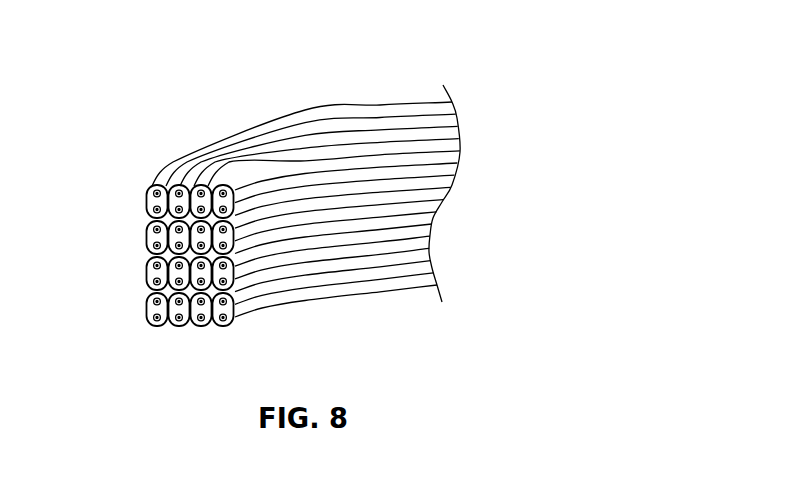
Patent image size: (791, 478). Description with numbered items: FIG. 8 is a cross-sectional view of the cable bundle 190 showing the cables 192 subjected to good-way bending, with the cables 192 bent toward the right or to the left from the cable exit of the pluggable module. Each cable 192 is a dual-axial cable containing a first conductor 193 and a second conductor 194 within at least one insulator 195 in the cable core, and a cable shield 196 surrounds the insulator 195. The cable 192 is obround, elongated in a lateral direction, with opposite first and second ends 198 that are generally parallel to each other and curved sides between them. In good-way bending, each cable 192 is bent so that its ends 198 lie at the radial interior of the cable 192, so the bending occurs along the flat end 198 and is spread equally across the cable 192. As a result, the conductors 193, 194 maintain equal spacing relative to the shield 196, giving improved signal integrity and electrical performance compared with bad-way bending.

The cable bundle 190 is at (388, 72).
The cable 192 is at (331, 273).
The first conductor 193 is at (155, 194).
The second conductor 194 is at (155, 210).
The insulator 195 is at (114, 183).
The cable shield 196 is at (168, 212).
The first and second ends 198 is at (214, 304).